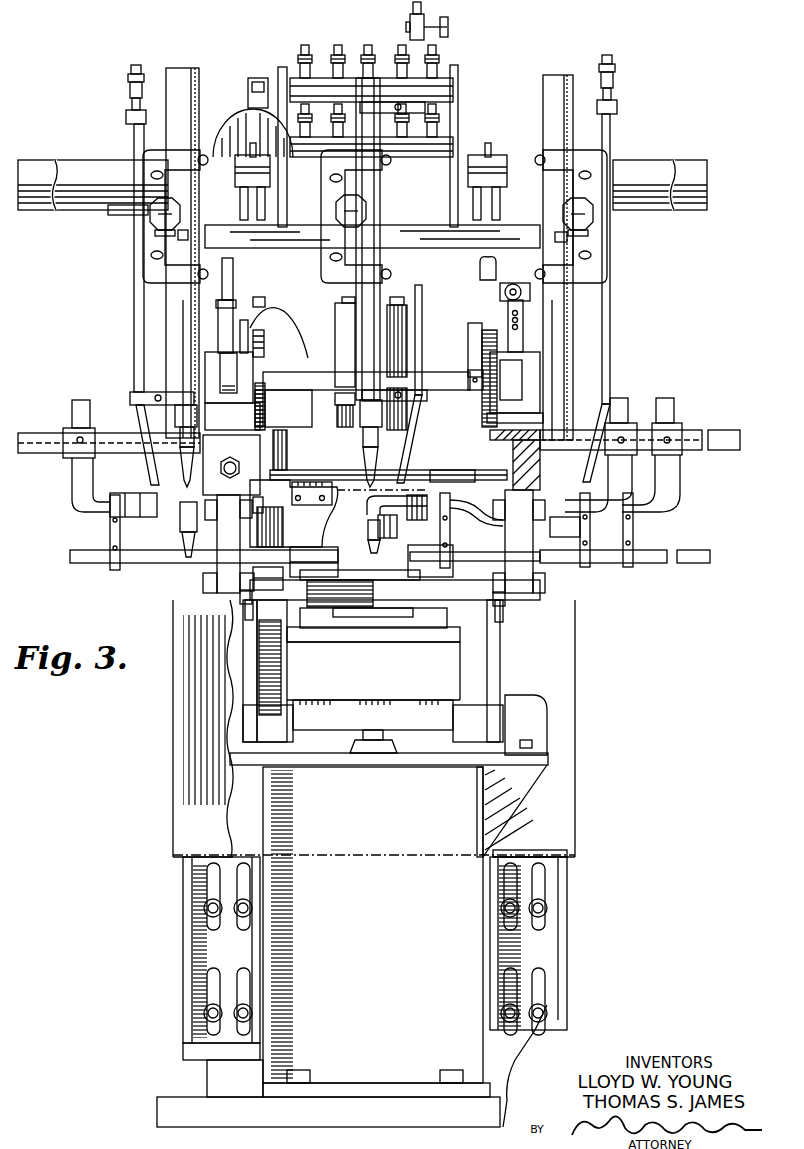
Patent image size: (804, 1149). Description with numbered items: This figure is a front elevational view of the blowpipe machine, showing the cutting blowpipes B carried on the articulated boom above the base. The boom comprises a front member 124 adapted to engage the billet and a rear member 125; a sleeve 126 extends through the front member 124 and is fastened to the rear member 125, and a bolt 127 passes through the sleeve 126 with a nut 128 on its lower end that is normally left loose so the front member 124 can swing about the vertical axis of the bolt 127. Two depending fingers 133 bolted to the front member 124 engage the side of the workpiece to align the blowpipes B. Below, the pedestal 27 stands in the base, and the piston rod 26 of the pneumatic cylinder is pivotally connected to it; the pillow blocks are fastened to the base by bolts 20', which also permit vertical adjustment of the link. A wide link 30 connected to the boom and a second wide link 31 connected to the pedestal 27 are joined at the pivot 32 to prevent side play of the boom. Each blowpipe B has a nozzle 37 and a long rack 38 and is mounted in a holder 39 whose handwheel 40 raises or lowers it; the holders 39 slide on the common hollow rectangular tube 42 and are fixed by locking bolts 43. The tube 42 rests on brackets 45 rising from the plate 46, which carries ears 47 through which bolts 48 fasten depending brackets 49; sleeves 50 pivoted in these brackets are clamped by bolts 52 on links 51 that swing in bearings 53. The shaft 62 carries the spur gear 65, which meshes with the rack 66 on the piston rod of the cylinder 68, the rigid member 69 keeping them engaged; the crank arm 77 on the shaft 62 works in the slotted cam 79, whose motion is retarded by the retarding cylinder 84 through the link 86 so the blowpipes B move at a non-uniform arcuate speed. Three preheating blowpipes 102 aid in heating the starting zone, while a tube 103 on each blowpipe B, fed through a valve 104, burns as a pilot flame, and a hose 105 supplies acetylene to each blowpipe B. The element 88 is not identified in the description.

The blowpipe B is at (182, 78).
The bolt 20' is at (372, 950).
The piston rod 26 is at (390, 752).
The pedestal 27 is at (385, 930).
The wide link 30 is at (391, 656).
The second wide link 31 is at (463, 657).
The pivotal connection 32 is at (243, 620).
The nozzle 37 is at (198, 473).
The rack 38 is at (362, 399).
The holder 39 is at (155, 262).
The handwheel 40 is at (172, 212).
The hollow rectangular tube 42 is at (73, 165).
The locking bolt 43 is at (128, 116).
The bracket 45 is at (270, 179).
The plate 46 is at (312, 248).
The ear 47 is at (178, 236).
The bolt 48 is at (155, 232).
The depending bracket 49 is at (190, 285).
The sleeve member 50 is at (233, 290).
The link 51 is at (218, 332).
The bolt 52 is at (505, 292).
The bearing 53 is at (213, 371).
The shaft 62 is at (320, 372).
The spur gear 65 is at (483, 398).
The rack 66 is at (483, 334).
The cylinder 68 is at (382, 286).
The rigid member 69 is at (470, 340).
The crank arm 77 is at (250, 343).
The cam 79 is at (263, 344).
The retarding cylinder 84 is at (285, 403).
The link 86 is at (273, 328).
The gauge 88 is at (240, 120).
The preheating blowpipe 102 is at (213, 533).
The tube 103 is at (133, 384).
The valve 104 is at (410, 21).
The hose 105 is at (405, 473).
The front member 124 is at (214, 478).
The rear member 125 is at (432, 470).
The sleeve 126 is at (338, 328).
The bolt 127 is at (407, 300).
The nut 128 is at (397, 529).
The finger 133 is at (243, 605).